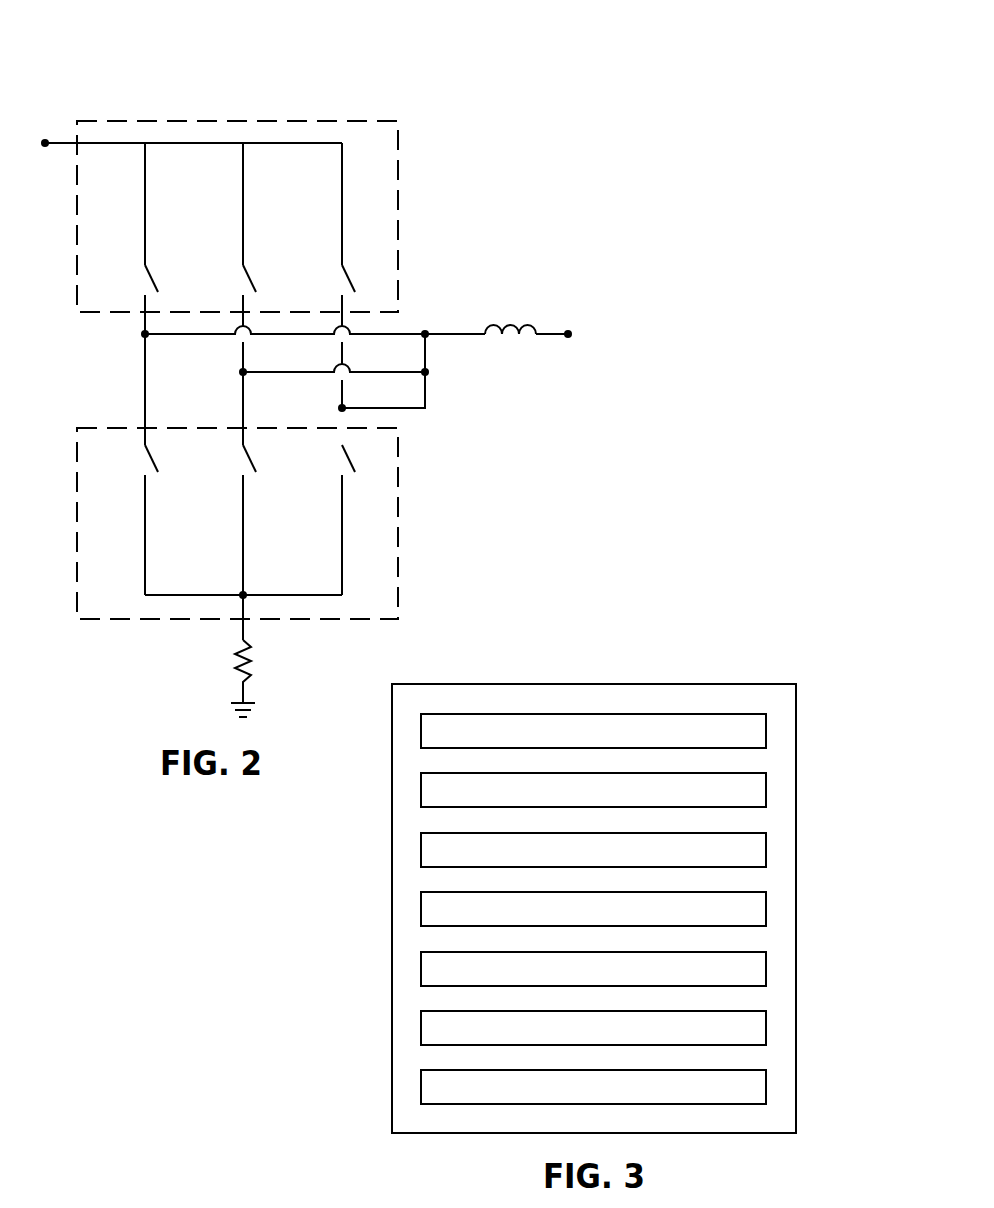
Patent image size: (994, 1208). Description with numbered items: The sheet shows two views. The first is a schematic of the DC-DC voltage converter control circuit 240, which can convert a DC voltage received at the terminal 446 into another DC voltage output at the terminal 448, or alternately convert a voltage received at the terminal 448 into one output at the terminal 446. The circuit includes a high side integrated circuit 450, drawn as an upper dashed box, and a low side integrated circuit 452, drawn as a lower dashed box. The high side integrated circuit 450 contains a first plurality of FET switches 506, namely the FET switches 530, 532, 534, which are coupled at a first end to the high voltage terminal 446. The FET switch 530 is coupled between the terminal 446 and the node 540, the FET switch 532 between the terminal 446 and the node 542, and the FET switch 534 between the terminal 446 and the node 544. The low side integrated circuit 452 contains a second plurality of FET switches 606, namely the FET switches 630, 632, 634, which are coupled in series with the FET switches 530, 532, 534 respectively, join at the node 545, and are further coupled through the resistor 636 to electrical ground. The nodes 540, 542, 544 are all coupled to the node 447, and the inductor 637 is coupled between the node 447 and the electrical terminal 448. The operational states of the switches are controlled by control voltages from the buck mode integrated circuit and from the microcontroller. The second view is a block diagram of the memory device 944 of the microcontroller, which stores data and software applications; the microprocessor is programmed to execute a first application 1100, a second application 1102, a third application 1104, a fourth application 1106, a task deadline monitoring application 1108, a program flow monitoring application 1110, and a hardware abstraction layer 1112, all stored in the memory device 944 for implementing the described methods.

In FIG. 2, the DC-DC voltage converter control circuit 240 is at (320, 86).
In FIG. 2, the terminal 446 is at (45, 140).
In FIG. 2, the node 447 is at (425, 334).
In FIG. 2, the terminal 448 is at (568, 334).
In FIG. 2, the high side integrated circuit 450 is at (140, 120).
In FIG. 2, the low side integrated circuit 452 is at (140, 620).
In FIG. 2, the first plurality of FET switches 506 is at (348, 251).
In FIG. 2, the FET switch 530 is at (145, 281).
In FIG. 2, the FET switch 532 is at (243, 282).
In FIG. 2, the FET switch 534 is at (342, 282).
In FIG. 2, the node 540 is at (145, 334).
In FIG. 2, the node 542 is at (243, 372).
In FIG. 2, the node 544 is at (342, 408).
In FIG. 2, the node 545 is at (243, 595).
In FIG. 2, the second plurality of FET switches 606 is at (193, 477).
In FIG. 2, the FET switch 630 is at (148, 457).
In FIG. 2, the FET switch 632 is at (243, 462).
In FIG. 2, the FET switch 634 is at (343, 457).
In FIG. 2, the resistor 636 is at (252, 653).
In FIG. 2, the inductor 637 is at (495, 340).
In FIG. 3, the memory device 944 is at (706, 684).
In FIG. 3, the first application 1100 is at (766, 729).
In FIG. 3, the second application 1102 is at (766, 788).
In FIG. 3, the third application 1104 is at (766, 848).
In FIG. 3, the fourth application 1106 is at (766, 907).
In FIG. 3, the task deadline monitoring application 1108 is at (766, 967).
In FIG. 3, the program flow monitoring application 1110 is at (766, 1026).
In FIG. 3, the hardware abstraction layer 1112 is at (766, 1085).